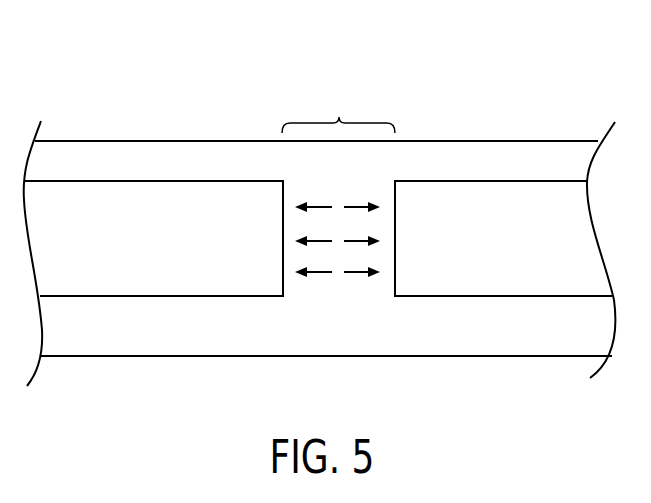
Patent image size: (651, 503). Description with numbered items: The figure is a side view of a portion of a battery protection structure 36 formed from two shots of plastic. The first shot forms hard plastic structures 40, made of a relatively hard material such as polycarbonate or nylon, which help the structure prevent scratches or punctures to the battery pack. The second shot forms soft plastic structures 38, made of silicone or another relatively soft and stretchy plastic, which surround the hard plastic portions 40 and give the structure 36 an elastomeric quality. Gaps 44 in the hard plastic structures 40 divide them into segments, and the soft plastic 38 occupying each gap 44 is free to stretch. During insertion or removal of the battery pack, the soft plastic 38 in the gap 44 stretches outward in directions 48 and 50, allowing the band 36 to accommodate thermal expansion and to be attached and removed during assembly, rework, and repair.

The battery protection structure 36 is at (166, 102).
The soft plastic structure 38 is at (88, 346).
The hard plastic structure 40 is at (161, 280).
The gap 44 is at (338, 113).
The direction 48 is at (322, 207).
The direction 50 is at (360, 241).